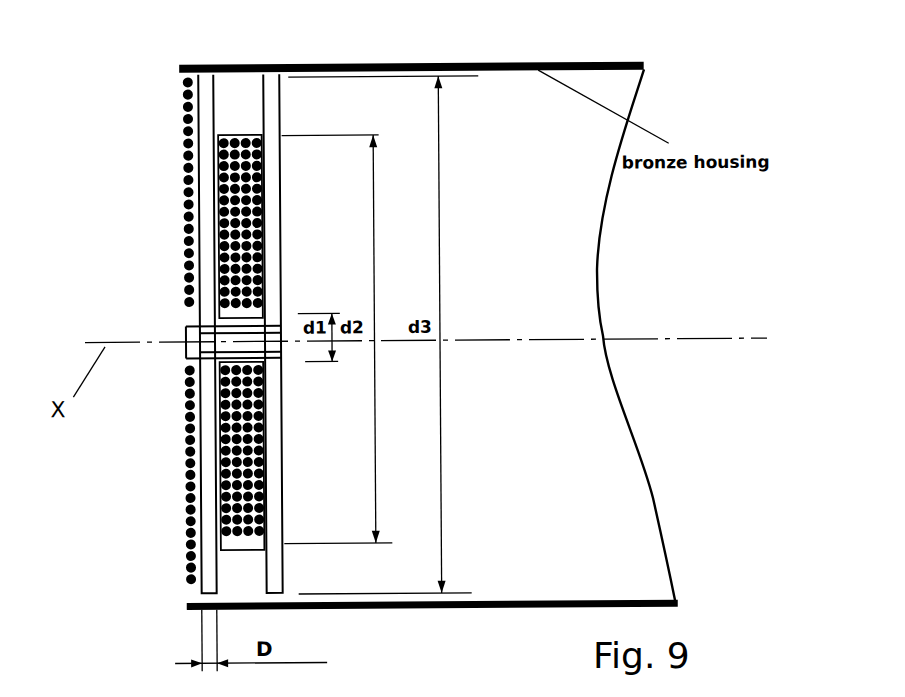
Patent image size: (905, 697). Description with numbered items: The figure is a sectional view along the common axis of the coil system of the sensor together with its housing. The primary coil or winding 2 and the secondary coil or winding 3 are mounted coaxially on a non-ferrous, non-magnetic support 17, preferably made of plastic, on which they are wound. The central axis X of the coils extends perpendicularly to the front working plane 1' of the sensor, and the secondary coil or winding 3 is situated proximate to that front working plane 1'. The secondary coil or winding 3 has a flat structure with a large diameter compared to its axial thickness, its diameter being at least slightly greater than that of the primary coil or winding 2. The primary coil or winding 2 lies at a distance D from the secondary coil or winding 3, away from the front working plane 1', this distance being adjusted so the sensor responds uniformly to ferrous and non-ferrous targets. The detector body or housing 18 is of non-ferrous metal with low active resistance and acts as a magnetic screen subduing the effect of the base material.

The front working plane 1' is at (176, 299).
The primary coil or winding 2 is at (231, 137).
The secondary coil or winding 3 is at (187, 233).
The support 17 is at (207, 405).
The detector body or housing 18 is at (466, 62).